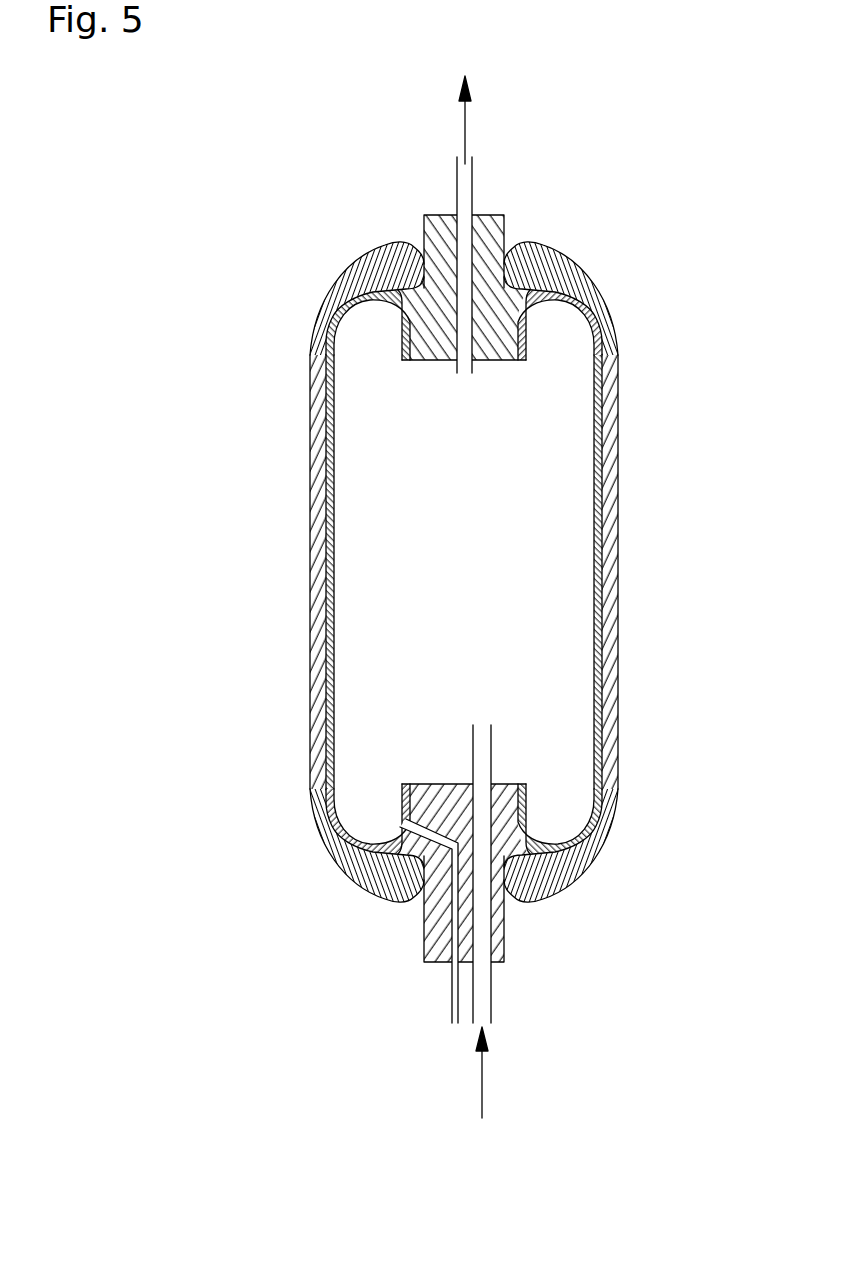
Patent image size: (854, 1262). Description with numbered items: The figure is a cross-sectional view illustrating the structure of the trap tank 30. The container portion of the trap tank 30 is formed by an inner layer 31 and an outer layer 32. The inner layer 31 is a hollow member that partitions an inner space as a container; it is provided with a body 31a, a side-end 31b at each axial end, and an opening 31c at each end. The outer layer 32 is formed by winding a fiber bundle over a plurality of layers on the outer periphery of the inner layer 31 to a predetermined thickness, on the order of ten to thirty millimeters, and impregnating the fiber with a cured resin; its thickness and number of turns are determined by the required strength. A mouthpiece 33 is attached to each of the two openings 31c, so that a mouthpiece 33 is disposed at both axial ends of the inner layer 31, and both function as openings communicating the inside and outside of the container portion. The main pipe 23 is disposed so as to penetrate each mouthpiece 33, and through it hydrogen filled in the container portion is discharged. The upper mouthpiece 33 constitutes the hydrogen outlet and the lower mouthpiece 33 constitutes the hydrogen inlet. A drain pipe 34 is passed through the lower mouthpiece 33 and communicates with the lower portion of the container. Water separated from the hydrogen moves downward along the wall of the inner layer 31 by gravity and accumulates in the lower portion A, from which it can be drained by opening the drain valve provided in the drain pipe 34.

The trap tank 30 is at (268, 239).
The inner layer 31 is at (602, 615).
The body 31a is at (602, 537).
The side-end 31b is at (560, 322).
The opening 31c is at (512, 387).
The outer layer 32 is at (311, 431).
The mouthpiece 33 is at (426, 231).
The main pipe 23 is at (457, 175).
The drain pipe 34 is at (452, 999).
The lower portion of the inner layer A is at (357, 804).